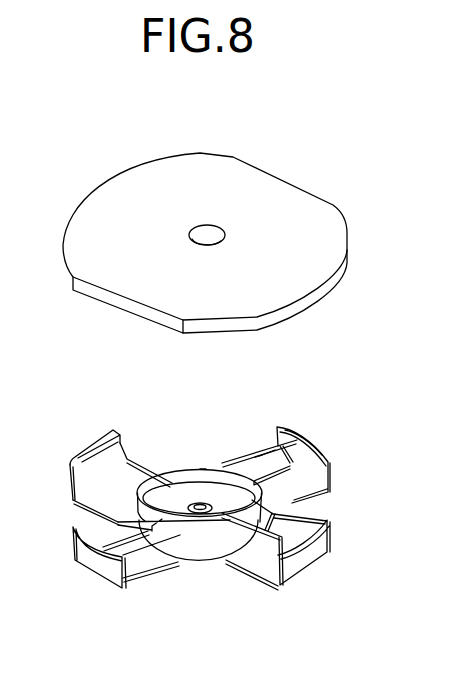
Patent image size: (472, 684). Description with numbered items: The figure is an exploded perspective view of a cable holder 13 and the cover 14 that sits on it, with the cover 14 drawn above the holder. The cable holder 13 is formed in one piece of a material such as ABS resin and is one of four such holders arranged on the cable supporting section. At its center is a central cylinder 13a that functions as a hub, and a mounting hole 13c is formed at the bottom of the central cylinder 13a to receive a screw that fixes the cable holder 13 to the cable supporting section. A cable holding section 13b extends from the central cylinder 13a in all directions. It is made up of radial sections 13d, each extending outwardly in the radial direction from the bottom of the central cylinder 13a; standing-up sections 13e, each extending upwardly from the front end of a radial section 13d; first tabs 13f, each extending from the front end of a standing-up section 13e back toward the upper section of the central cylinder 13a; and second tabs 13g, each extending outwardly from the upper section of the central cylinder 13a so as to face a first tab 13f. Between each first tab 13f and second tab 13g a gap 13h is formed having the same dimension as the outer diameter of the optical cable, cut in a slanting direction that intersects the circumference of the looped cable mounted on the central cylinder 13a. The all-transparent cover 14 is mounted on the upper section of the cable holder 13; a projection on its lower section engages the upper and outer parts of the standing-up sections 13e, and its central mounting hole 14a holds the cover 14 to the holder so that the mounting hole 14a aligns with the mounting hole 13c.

The cover 14 is at (348, 221).
The mounting hole 14a is at (217, 230).
The cable holder 13 is at (210, 511).
The central cylinder 13a is at (201, 558).
The cable holding section 13b is at (70, 463).
The mounting hole 13c is at (198, 507).
The radial section 13d is at (103, 497).
The standing-up section 13e is at (285, 432).
The first tab 13f is at (268, 455).
The second tab 13g is at (224, 444).
The gap 13h is at (259, 456).